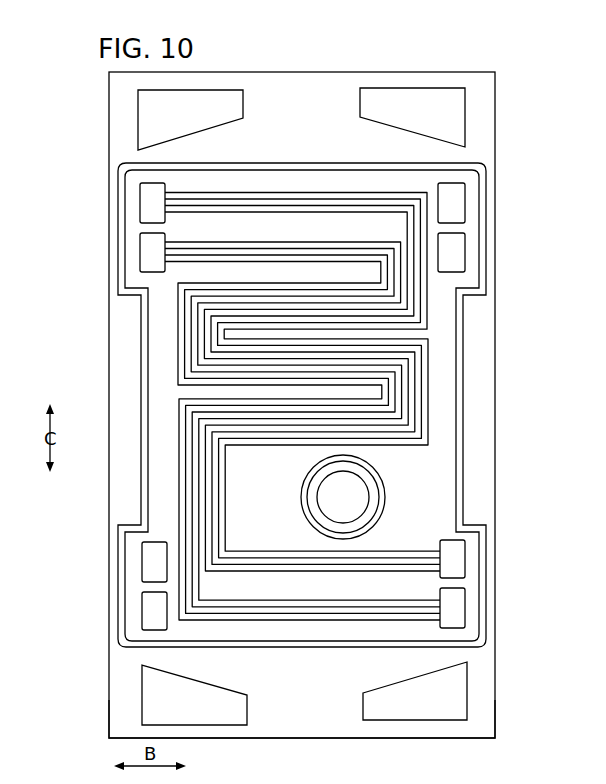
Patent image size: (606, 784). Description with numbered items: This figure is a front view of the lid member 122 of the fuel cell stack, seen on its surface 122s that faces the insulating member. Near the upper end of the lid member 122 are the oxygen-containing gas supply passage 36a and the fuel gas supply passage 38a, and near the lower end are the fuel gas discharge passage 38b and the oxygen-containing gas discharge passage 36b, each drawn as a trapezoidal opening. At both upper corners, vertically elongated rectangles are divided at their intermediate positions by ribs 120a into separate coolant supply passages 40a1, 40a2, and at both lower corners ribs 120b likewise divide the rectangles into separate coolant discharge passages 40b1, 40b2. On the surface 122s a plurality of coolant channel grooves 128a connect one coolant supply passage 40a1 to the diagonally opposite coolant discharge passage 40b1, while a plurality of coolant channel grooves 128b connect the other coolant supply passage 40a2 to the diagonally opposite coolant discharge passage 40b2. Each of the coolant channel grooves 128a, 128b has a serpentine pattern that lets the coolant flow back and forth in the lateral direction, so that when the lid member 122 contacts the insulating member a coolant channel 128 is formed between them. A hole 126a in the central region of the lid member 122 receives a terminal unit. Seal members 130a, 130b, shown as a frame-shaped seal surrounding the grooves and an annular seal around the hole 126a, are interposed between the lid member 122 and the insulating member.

The lid member 122 is at (478, 61).
The surface of lid member 122s is at (320, 712).
The oxygen-containing gas supply passage 36a is at (152, 118).
The oxygen-containing gas discharge passage 36b is at (455, 697).
The fuel gas supply passage 38a is at (450, 112).
The fuel gas discharge passage 38b is at (155, 698).
The coolant supply passage 40a1 is at (148, 202).
The coolant supply passage 40a2 is at (148, 258).
The coolant discharge passage 40b1 is at (150, 560).
The coolant discharge passage 40b2 is at (150, 612).
The rib 120a is at (148, 227).
The rib 120b is at (148, 584).
The coolant channel 128 is at (236, 374).
The coolant channel grooves 128a is at (326, 198).
The coolant channel grooves 128b is at (268, 244).
The seal member 130a is at (470, 447).
The seal member 130b is at (305, 478).
The hole 126a is at (328, 505).